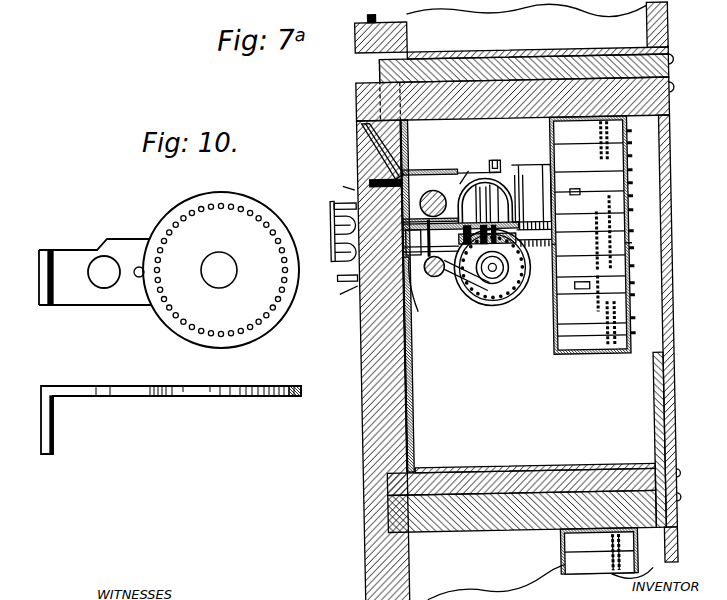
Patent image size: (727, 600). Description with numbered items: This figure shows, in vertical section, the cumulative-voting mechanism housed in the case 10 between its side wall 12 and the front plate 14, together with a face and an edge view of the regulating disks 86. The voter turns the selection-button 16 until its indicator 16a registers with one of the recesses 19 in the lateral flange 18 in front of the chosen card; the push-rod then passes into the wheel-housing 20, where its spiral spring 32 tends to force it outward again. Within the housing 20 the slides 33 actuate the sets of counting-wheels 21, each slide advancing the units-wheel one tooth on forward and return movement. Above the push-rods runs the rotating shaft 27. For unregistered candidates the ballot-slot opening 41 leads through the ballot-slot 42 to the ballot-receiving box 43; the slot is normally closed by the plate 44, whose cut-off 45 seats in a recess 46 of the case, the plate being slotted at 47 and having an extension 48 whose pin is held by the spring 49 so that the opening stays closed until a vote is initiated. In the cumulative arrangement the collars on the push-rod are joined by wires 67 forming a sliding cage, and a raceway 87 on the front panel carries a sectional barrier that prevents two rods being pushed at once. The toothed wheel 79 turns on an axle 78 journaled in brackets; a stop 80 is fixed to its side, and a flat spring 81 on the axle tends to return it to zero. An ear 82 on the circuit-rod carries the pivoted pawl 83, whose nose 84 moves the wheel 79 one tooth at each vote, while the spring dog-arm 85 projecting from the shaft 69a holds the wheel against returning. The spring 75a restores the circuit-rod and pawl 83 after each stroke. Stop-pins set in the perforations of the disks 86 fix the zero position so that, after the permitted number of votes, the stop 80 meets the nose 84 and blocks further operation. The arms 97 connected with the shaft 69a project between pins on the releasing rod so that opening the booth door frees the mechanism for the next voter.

In FIG. 7A, the case 10 is at (673, 47).
In FIG. 7A, the case wall 12 is at (674, 236).
In FIG. 7A, the dial 14 is at (358, 327).
In FIG. 7A, the selection-button 16 is at (332, 241).
In FIG. 7A, the indicator 16a is at (336, 203).
In FIG. 7A, the lateral flange 18 is at (345, 296).
In FIG. 7A, the recesses 19 is at (345, 270).
In FIG. 7A, the wheel-housing 20 is at (631, 247).
In FIG. 7A, the counting-wheels 21 is at (594, 345).
In FIG. 7A, the rotating shaft 27 is at (453, 181).
In FIG. 7A, the spiral spring 32 is at (534, 227).
In FIG. 7A, the slides 33 is at (577, 236).
In FIG. 7A, the ballot-slot opening 41 is at (360, 119).
In FIG. 7A, the ballot-slot 42 is at (360, 138).
In FIG. 7A, the ballot-receiving box 43 is at (541, 32).
In FIG. 7A, the plate 44 is at (392, 151).
In FIG. 7A, the cut-off 45 is at (396, 183).
In FIG. 7A, the recess 46 is at (373, 176).
In FIG. 7A, the slot 47 is at (404, 183).
In FIG. 7A, the extension 48 is at (466, 176).
In FIG. 7A, the spring 49 is at (522, 166).
In FIG. 7A, the wires 67 is at (488, 177).
In FIG. 7A, the shaft 69a is at (436, 278).
In FIG. 7A, the spring 75a is at (345, 183).
In FIG. 7A, the axle 78 is at (500, 306).
In FIG. 7A, the toothed wheel 79 is at (463, 226).
In FIG. 7A, the stop 80 is at (460, 238).
In FIG. 7A, the flat spring 81 is at (492, 274).
In FIG. 7A, the ear 82 is at (425, 202).
In FIG. 7A, the pawl 83 is at (485, 200).
In FIG. 7A, the nose 84 is at (521, 198).
In FIG. 7A, the spring dog-arm 85 is at (463, 293).
In FIG. 10, the disks 86 is at (195, 408).
In FIG. 7A, the disks 86 is at (526, 284).
In FIG. 7A, the raceway 87 is at (414, 286).
In FIG. 7A, the arms 97 is at (338, 310).